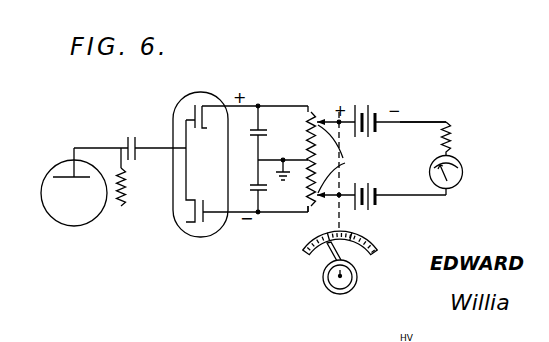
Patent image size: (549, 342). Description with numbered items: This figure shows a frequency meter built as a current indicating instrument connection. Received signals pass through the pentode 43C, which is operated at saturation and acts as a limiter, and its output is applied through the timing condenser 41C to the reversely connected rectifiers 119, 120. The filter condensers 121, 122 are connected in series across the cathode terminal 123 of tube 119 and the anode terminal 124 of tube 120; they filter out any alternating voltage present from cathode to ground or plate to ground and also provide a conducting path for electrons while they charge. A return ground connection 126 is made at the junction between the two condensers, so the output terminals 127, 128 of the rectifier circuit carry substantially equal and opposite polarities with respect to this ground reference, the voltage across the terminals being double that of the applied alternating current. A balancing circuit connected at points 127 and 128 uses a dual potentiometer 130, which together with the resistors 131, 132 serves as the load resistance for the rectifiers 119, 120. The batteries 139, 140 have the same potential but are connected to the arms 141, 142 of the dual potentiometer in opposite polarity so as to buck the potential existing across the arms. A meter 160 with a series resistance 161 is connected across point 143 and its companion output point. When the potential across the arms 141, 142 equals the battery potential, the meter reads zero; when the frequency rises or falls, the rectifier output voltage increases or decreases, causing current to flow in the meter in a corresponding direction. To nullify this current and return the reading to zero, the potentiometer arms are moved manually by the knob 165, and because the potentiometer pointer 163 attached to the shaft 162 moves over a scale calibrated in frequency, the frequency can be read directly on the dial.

The pentode 43C is at (55, 166).
The timing condenser 41C is at (127, 135).
The rectifier 119 is at (197, 101).
The rectifier 120 is at (190, 229).
The cathode terminal 123 is at (262, 104).
The filter condenser 121 is at (252, 134).
The filter condenser 122 is at (252, 187).
The return ground connection 126 is at (293, 151).
The anode terminal 124 is at (255, 221).
The output terminal 127 is at (295, 135).
The resistor 131 is at (306, 125).
The resistor 132 is at (306, 190).
The output terminal 128 is at (307, 214).
The potentiometer arm 141 is at (322, 117).
The potentiometer arm 142 is at (330, 197).
The dual potentiometer 130 is at (346, 159).
The battery 139 is at (371, 104).
The battery 140 is at (383, 203).
The point 143 is at (418, 120).
The series resistance 161 is at (452, 134).
The meter 160 is at (463, 169).
The shaft 162 is at (339, 219).
The potentiometer pointer 163 is at (318, 265).
The knob 165 is at (331, 293).